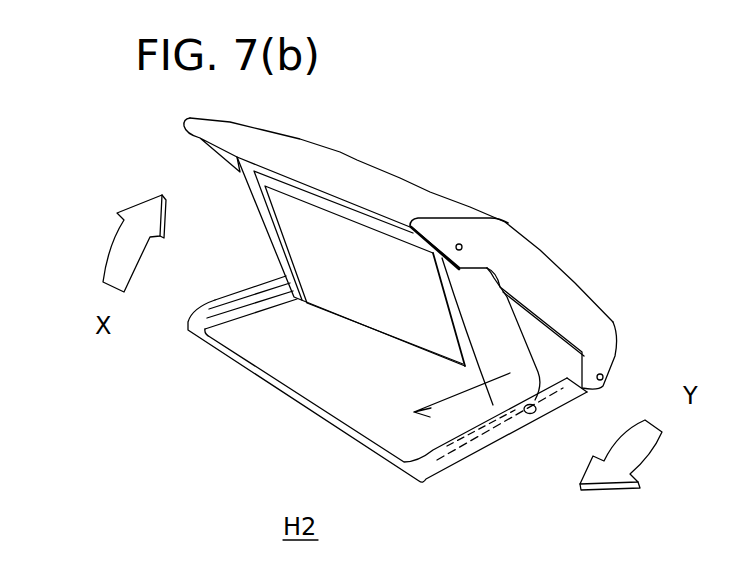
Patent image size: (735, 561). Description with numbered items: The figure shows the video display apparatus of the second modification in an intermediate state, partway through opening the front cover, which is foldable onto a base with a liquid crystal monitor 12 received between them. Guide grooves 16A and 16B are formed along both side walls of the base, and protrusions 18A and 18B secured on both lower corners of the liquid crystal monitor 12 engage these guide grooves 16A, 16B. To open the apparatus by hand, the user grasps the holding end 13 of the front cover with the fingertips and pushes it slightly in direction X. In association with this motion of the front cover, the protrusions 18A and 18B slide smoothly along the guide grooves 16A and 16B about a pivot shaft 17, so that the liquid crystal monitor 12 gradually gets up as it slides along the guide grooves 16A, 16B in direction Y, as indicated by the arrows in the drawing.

The liquid crystal monitor 12 is at (262, 218).
The holding end 13 is at (426, 226).
The pivot shaft 17 is at (460, 244).
The guide groove 16A is at (230, 308).
The guide groove 16B is at (491, 444).
The protrusion 18A is at (285, 270).
The protrusion 18B is at (537, 410).